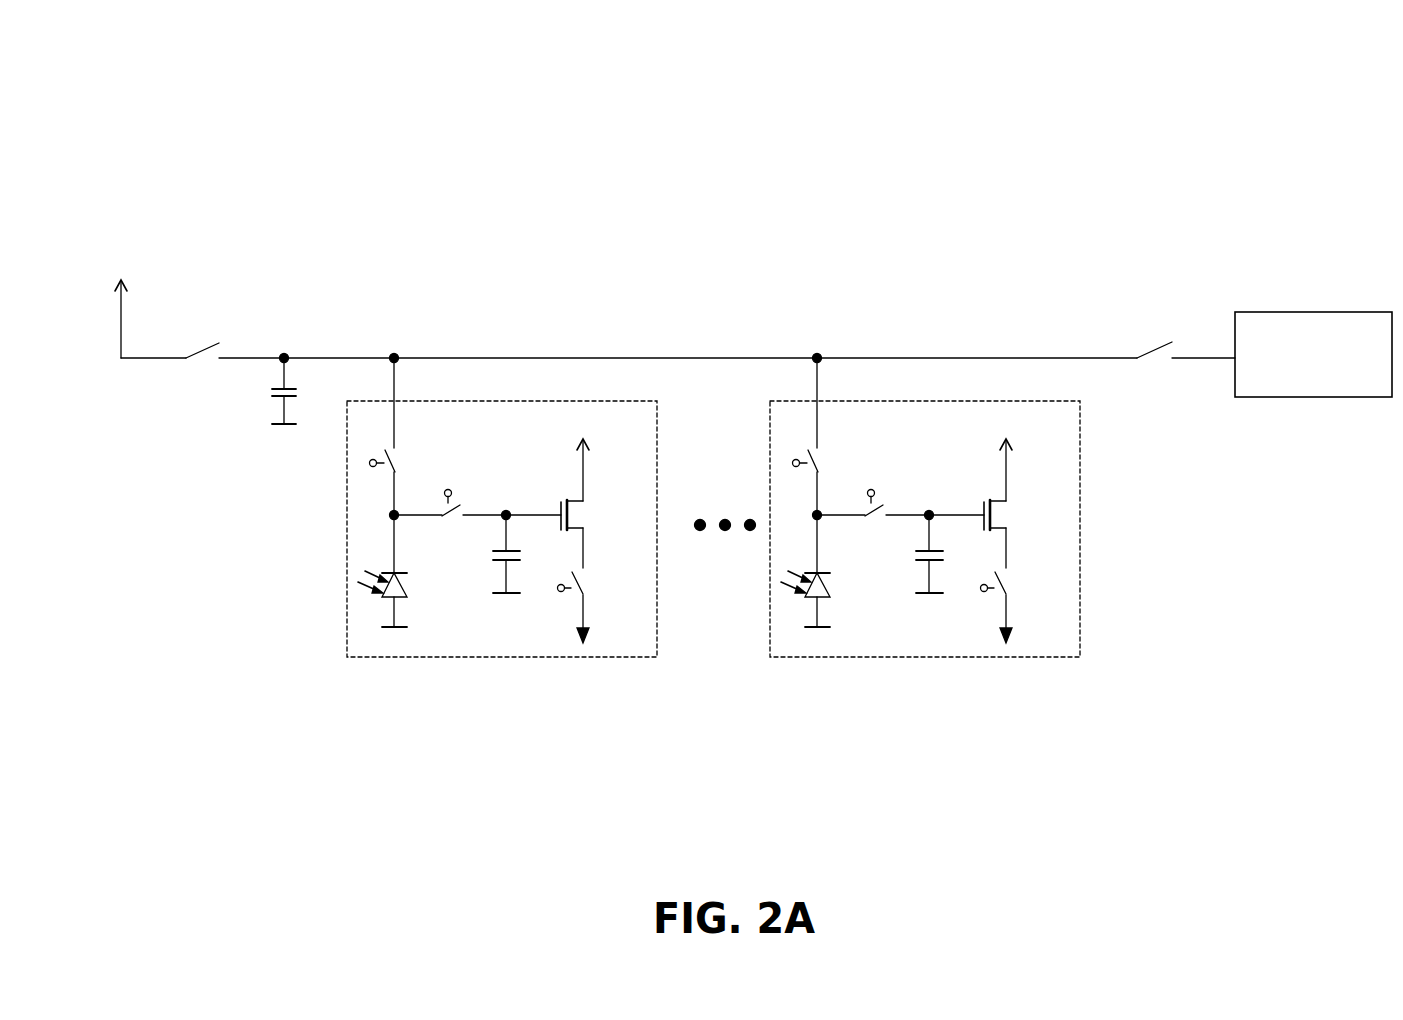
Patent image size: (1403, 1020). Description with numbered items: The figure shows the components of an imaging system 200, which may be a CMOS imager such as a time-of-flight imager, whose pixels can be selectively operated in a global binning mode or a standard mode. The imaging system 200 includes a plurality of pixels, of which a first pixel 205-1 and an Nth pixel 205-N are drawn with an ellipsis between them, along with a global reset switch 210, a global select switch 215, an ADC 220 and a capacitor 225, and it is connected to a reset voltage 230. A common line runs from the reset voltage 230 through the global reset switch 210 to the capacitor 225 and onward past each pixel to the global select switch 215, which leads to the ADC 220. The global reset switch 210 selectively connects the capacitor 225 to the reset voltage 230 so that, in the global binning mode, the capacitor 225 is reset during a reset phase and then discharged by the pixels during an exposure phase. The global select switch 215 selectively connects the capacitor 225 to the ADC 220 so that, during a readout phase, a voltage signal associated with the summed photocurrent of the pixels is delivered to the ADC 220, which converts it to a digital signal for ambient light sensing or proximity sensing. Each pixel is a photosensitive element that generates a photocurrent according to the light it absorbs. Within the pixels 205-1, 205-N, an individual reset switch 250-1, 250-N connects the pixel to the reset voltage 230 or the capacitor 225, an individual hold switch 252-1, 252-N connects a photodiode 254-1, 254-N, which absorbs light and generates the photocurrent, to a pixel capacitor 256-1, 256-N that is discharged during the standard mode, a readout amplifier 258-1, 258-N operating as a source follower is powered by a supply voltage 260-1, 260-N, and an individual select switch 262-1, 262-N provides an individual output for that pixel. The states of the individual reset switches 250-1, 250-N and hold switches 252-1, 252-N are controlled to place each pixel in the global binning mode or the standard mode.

The imaging system 200 is at (218, 36).
The reset voltage 230 is at (148, 298).
The global reset switch 210 is at (629, 338).
The capacitor 225 is at (257, 389).
The global select switch 215 is at (1183, 339).
The ADC 220 is at (1296, 379).
The pixel 205-1 is at (502, 548).
The pixel 205-N is at (925, 548).
The individual reset switch 250-1 is at (415, 436).
The individual reset switch 250-N is at (839, 436).
The individual hold switch 252-1 is at (450, 519).
The individual hold switch 252-N is at (873, 519).
The photodiode 254-1 is at (410, 571).
The photodiode 254-N is at (834, 571).
The capacitor 256-1 is at (480, 554).
The capacitor 256-N is at (902, 554).
The readout amplifier 258-1 is at (576, 515).
The readout amplifier 258-N is at (1000, 515).
The supply voltage 260-1 is at (548, 455).
The supply voltage 260-N is at (971, 455).
The individual select switch 262-1 is at (603, 585).
The individual select switch 262-N is at (1027, 585).